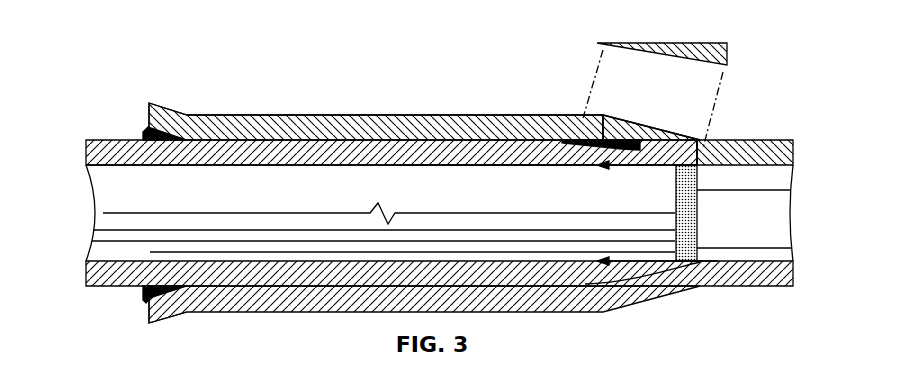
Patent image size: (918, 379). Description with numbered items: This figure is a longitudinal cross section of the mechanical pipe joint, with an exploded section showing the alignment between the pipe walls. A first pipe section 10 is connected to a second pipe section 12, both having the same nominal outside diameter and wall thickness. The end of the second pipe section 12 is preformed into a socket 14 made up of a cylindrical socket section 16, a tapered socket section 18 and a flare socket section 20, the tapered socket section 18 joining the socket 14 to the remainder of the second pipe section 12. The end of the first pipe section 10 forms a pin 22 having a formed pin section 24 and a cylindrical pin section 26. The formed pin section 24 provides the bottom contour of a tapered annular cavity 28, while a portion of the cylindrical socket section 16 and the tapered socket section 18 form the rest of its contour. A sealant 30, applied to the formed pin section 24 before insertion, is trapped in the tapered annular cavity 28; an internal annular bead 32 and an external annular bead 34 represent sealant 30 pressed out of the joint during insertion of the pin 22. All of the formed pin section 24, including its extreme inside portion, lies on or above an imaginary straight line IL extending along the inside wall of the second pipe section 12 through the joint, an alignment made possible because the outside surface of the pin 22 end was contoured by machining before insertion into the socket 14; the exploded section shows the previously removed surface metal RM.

The first pipe section 10 is at (98, 150).
The second pipe section 12 is at (770, 150).
The socket 14 is at (478, 100).
The cylindrical socket section 16 is at (333, 127).
The tapered socket section 18 is at (670, 133).
The flare socket section 20 is at (160, 113).
The pin 22 is at (472, 175).
The formed pin section 24 is at (569, 178).
The cylindrical pin section 26 is at (330, 157).
The tapered annular cavity 28 is at (603, 115).
The sealant 30 is at (613, 142).
The internal annular bead 32 is at (688, 163).
The external annular bead 34 is at (147, 130).
The removed surface metal RM is at (597, 44).
The imaginary straight line IL is at (665, 165).